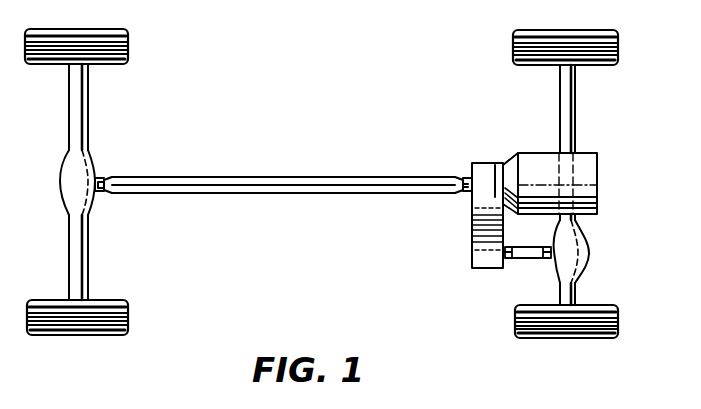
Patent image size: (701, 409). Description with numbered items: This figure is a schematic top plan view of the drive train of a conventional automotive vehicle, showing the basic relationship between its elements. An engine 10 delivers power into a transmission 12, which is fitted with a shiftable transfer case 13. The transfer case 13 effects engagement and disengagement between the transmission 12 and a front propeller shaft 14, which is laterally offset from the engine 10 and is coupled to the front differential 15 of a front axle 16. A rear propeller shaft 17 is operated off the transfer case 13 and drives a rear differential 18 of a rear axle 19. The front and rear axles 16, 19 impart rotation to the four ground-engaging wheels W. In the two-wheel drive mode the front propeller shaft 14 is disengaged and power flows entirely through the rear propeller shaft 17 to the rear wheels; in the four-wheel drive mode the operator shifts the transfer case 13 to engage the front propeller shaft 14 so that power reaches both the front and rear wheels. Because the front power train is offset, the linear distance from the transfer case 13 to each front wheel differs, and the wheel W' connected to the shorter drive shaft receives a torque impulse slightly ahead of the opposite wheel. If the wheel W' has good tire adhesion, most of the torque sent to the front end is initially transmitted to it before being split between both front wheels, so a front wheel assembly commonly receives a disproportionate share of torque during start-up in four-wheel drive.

The engine 10 is at (597, 186).
The transmission 12 is at (503, 165).
The transfer case 13 is at (472, 232).
The front propeller shaft 14 is at (545, 259).
The front differential 15 is at (612, 270).
The front axle 16 is at (575, 118).
The rear propeller shaft 17 is at (327, 183).
The rear differential 18 is at (70, 178).
The rear axle 19 is at (73, 247).
The ground-engaging wheels W is at (321, 178).
The wheel connected to the shorter drive shaft W' is at (587, 315).